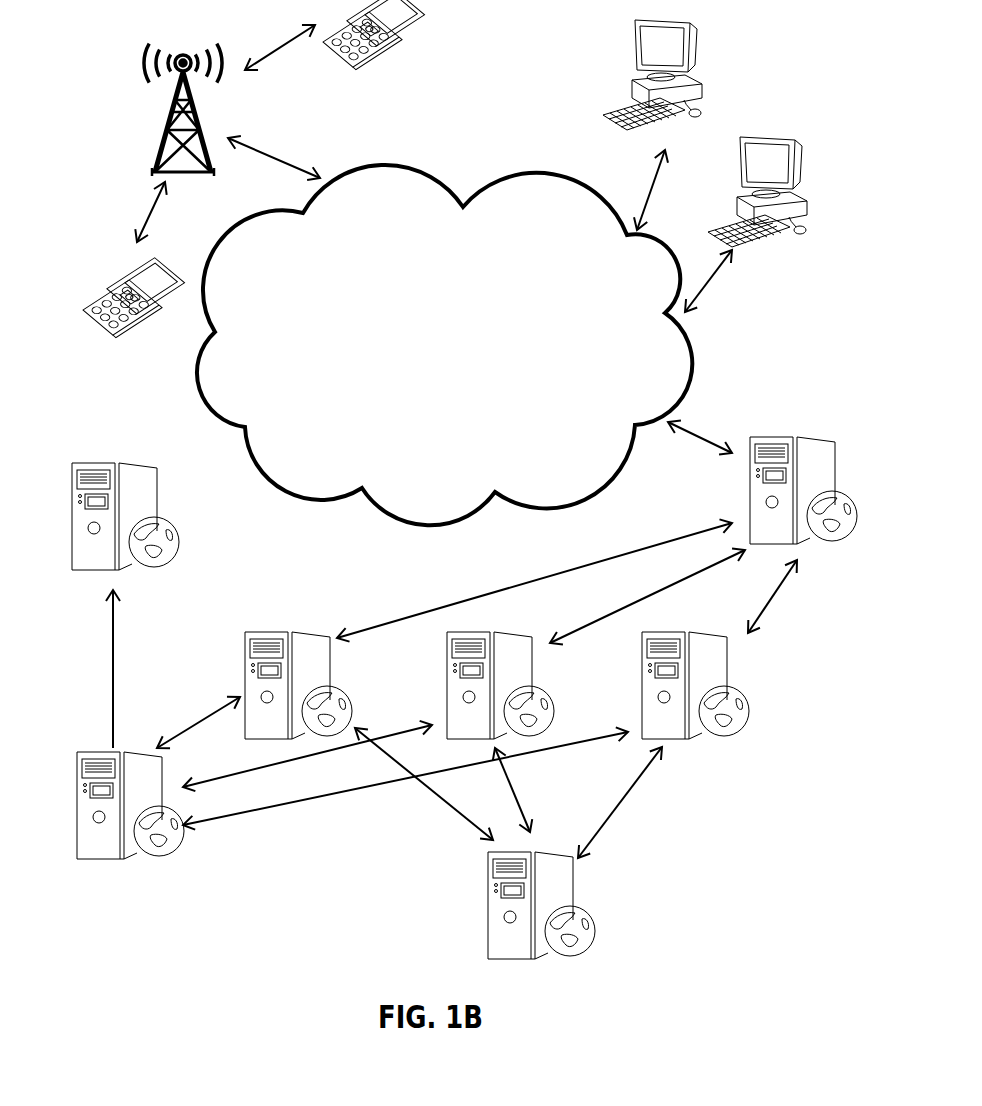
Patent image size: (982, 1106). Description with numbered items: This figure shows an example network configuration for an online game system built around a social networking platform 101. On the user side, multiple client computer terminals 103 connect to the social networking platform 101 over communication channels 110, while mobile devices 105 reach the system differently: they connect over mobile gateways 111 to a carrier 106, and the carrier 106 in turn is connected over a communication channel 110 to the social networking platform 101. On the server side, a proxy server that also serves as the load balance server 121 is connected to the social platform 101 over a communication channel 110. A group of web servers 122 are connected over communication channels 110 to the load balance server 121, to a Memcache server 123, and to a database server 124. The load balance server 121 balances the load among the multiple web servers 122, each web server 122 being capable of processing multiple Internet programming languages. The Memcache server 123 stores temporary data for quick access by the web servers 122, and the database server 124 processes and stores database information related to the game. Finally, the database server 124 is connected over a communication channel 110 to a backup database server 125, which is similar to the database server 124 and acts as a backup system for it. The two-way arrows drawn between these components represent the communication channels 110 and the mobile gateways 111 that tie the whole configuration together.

The social networking platform 101 is at (444, 333).
The client computer terminals 103 is at (693, 133).
The mobile devices 105 is at (255, 183).
The carrier 106 is at (167, 110).
The communication channel 110 is at (463, 492).
The mobile gateways 111 is at (208, 132).
The load balance server 121 is at (803, 476).
The web servers 122 is at (497, 670).
The Memcache server 123 is at (541, 923).
The database server 124 is at (130, 823).
The backup database server 125 is at (125, 501).